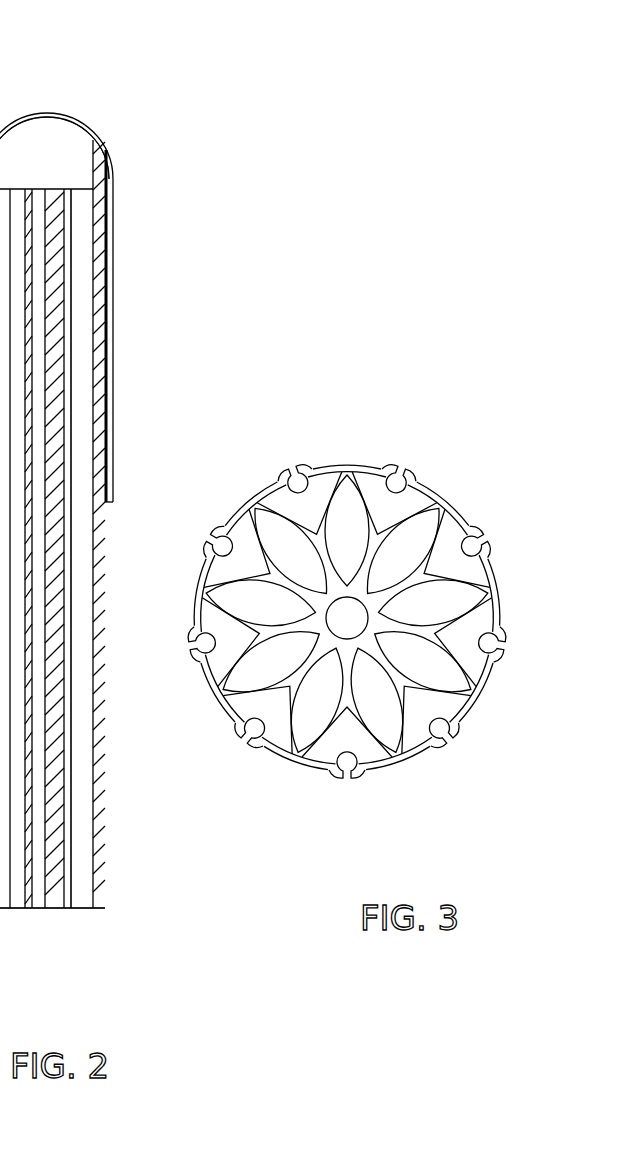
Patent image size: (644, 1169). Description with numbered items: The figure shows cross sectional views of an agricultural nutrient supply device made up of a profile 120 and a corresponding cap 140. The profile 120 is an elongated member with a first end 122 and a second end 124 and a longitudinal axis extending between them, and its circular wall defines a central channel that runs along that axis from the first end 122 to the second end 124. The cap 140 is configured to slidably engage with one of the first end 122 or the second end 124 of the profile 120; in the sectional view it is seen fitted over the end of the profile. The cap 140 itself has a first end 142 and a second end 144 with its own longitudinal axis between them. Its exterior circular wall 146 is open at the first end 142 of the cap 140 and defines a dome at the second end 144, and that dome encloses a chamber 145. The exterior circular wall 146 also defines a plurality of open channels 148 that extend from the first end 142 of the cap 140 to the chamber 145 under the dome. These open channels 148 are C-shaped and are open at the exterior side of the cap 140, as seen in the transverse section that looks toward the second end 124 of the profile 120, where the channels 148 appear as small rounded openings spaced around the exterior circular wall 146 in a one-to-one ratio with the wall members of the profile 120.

In FIG. 2, the profile 120 is at (96, 698).
In FIG. 3, the profile 120 is at (428, 565).
In FIG. 2, the first end of the profile 122 is at (60, 190).
In FIG. 2, the second end of the profile 124 is at (57, 908).
In FIG. 2, the cap 140 is at (103, 147).
In FIG. 2, the first end of the cap 142 is at (108, 503).
In FIG. 2, the second end of the cap 144 is at (27, 113).
In FIG. 2, the chamber 145 is at (23, 168).
In FIG. 3, the exterior circular wall 146 is at (337, 470).
In FIG. 3, the open channels 148 is at (445, 843).